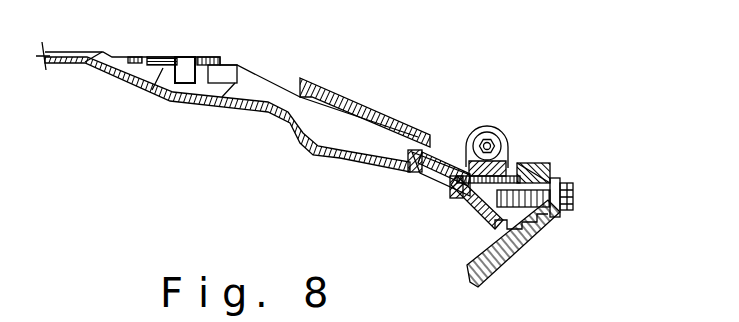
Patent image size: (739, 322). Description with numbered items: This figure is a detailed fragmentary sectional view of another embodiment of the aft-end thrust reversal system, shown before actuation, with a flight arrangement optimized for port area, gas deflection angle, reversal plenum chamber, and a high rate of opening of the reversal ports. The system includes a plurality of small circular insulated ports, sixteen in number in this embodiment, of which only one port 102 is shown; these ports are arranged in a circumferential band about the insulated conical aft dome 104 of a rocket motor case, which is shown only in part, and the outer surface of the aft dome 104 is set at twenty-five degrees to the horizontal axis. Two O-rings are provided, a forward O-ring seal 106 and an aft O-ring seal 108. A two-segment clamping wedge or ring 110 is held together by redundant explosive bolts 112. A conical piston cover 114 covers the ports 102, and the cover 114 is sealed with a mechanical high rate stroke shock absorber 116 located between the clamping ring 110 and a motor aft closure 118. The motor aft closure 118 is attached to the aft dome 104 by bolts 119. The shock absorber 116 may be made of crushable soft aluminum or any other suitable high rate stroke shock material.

The insulated port 102 is at (440, 177).
The insulated conical aft dome 104 is at (313, 118).
The forward O-ring seal 106 is at (408, 156).
The aft O-ring seal 108 is at (463, 181).
The clamping wedge or ring 110 is at (490, 167).
The explosive bolt 112 is at (477, 125).
The conical piston cover 114 is at (407, 137).
The high rate stroke shock absorber 116 is at (465, 177).
The motor aft closure 118 is at (551, 170).
The bolt 119 is at (573, 203).